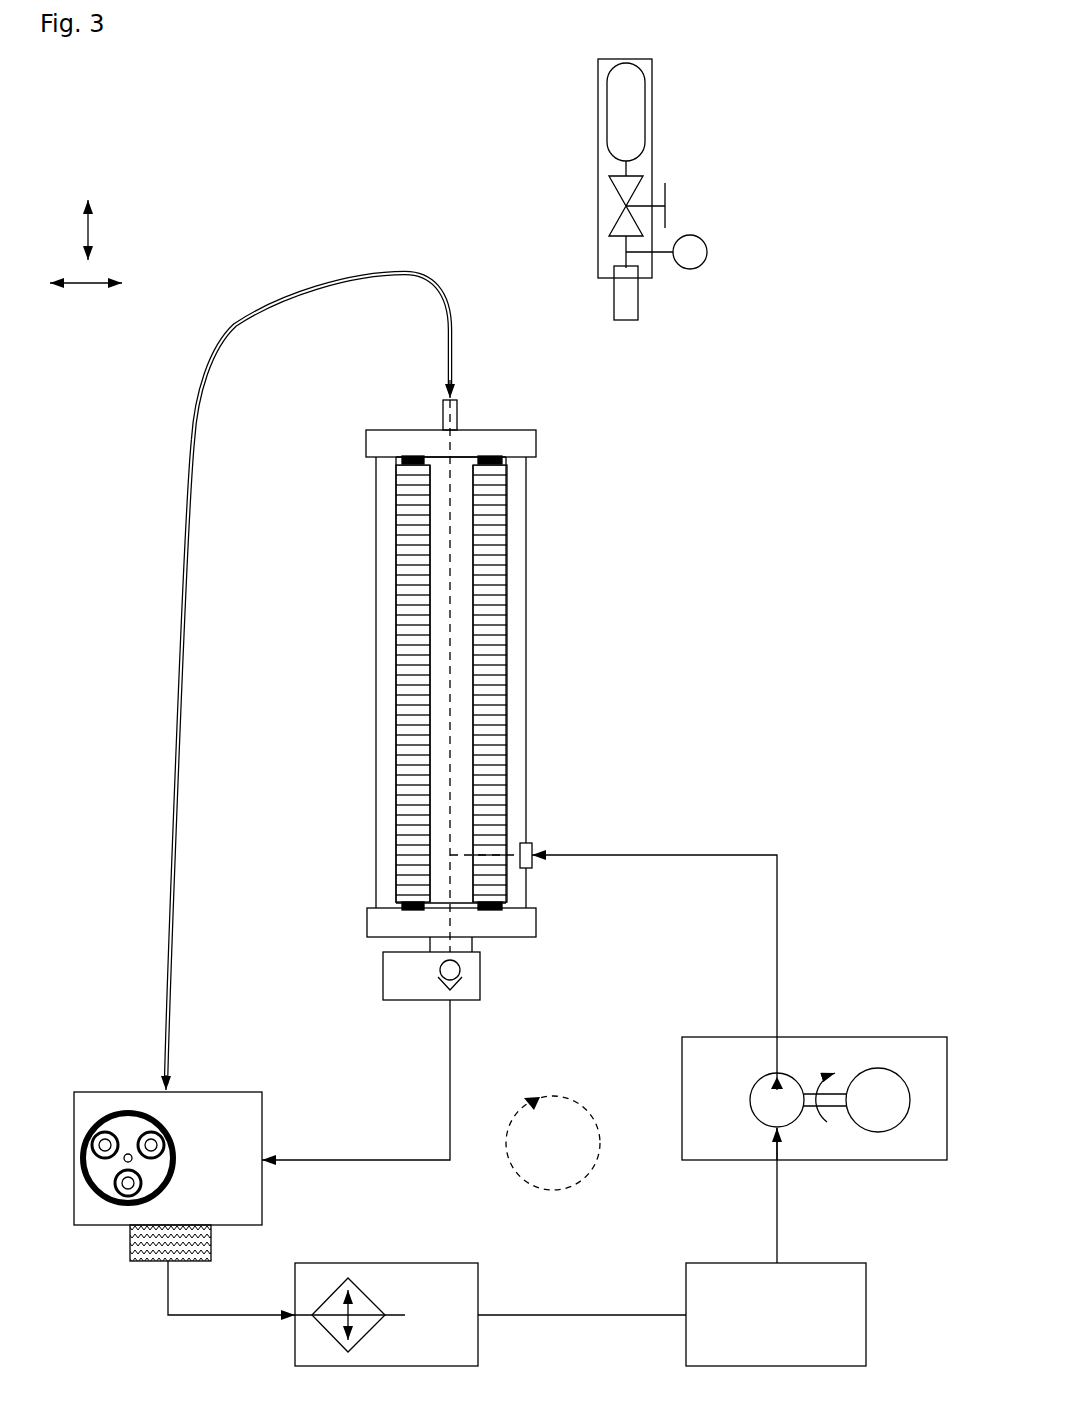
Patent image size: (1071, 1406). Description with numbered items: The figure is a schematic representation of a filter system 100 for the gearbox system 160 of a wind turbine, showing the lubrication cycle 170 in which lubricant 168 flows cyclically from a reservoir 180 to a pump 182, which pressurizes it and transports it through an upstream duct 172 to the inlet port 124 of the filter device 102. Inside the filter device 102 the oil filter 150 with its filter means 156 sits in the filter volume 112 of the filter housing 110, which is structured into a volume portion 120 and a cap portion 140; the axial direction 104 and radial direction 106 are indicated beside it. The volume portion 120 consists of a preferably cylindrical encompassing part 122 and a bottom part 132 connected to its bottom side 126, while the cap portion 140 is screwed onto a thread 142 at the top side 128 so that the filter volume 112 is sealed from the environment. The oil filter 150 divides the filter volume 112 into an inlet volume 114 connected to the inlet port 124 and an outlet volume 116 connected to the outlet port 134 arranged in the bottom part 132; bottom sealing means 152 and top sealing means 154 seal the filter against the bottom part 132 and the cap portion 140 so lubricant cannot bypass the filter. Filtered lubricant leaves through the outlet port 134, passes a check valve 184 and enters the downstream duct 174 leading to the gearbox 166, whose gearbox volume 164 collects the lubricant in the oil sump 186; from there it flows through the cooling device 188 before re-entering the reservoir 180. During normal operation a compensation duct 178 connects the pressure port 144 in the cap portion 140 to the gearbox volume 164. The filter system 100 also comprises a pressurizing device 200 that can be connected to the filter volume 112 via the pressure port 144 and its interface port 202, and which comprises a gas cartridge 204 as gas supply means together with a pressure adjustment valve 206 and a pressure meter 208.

The filter system 100 is at (152, 118).
The filter device 102 is at (640, 562).
The axial direction 104 is at (88, 232).
The radial direction 106 is at (87, 286).
The filter housing 110 is at (316, 515).
The filter volume 112 is at (514, 522).
The inlet volume 114 is at (520, 567).
The outlet volume 116 is at (462, 725).
The volume portion 120 is at (338, 703).
The encompassing part 122 is at (376, 668).
The inlet port 124 is at (530, 842).
The bottom side 126 is at (373, 866).
The top side 128 is at (375, 478).
The bottom part 132 is at (367, 922).
The outlet port 134 is at (465, 935).
The cap portion 140 is at (366, 442).
The thread 142 is at (536, 452).
The pressure port 144 is at (458, 418).
The oil filter 150 is at (393, 565).
The bottom sealing means 152 is at (497, 913).
The top sealing means 154 is at (418, 455).
The filter means 156 is at (498, 652).
The gearbox system 160 is at (833, 466).
The gearbox volume 164 is at (128, 1130).
The gearbox 166 is at (168, 1158).
The lubricant 168 is at (153, 1252).
The lubrication cycle 170 is at (553, 1143).
The upstream duct 172 is at (700, 852).
The downstream duct 174 is at (452, 1065).
The compensation duct 178 is at (175, 563).
The reservoir 180 is at (776, 1247).
The pump 182 is at (814, 1098).
The check valve 184 is at (431, 976).
The oil sump 186 is at (130, 1250).
The cooling device 188 is at (490, 1314).
The pressurizing device 200 is at (770, 112).
The interface port 202 is at (630, 305).
The gas cartridge 204 is at (635, 112).
The pressure adjustment valve 206 is at (665, 193).
The pressure meter 208 is at (692, 252).